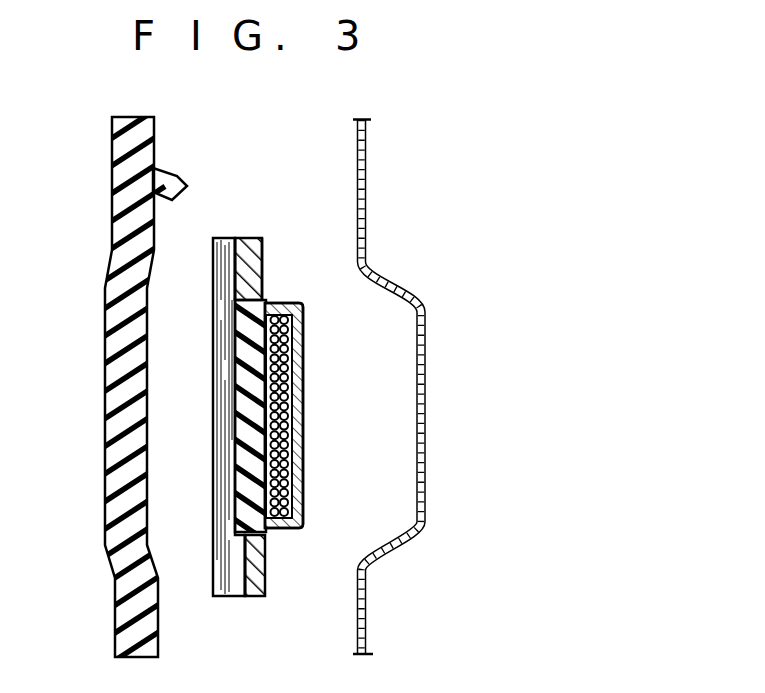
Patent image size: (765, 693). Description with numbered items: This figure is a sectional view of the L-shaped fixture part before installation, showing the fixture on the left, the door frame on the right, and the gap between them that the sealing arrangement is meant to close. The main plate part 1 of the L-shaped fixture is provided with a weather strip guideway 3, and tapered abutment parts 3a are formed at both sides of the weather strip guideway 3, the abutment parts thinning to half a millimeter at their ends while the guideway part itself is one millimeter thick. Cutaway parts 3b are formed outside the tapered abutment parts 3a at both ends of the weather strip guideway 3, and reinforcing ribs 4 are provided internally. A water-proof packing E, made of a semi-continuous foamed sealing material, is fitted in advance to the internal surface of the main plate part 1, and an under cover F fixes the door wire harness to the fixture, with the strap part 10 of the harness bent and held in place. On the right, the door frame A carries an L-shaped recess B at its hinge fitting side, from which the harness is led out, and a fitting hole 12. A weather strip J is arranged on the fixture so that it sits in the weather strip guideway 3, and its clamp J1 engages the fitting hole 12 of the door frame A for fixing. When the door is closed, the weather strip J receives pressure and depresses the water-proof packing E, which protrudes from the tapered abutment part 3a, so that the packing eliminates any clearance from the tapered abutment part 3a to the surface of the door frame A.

The weather strip J is at (108, 280).
The clamp J1 is at (179, 182).
The main plate part 1 is at (213, 366).
The weather strip guideway 3 is at (228, 421).
The tapered abutment part 3a is at (240, 263).
The cutaway part 3b is at (235, 262).
The water-proof packing E is at (262, 262).
The reinforcing rib 4 is at (260, 478).
The under cover F is at (303, 319).
The strap part 10 is at (278, 442).
The door frame A is at (370, 132).
The fitting hole 12 is at (364, 181).
The L-shaped recess B is at (400, 357).